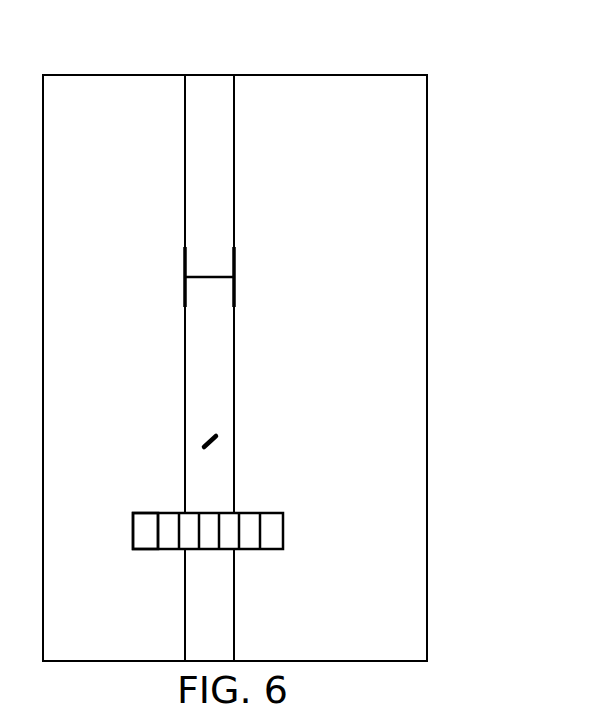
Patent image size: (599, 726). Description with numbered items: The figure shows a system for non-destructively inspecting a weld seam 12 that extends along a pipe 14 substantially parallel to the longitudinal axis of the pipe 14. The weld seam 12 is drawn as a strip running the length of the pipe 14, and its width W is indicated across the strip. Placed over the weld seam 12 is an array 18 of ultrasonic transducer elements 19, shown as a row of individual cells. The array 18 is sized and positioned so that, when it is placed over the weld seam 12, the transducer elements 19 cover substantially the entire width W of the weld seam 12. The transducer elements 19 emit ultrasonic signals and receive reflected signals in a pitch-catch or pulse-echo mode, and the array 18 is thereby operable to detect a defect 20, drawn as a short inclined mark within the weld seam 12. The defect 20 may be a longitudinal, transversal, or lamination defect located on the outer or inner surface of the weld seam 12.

The weld seam 12 is at (198, 95).
The pipe 14 is at (427, 373).
The array 18 is at (267, 550).
The transducer element 19 is at (183, 535).
The defect 20 is at (203, 437).
The width of the weld seam W is at (222, 275).